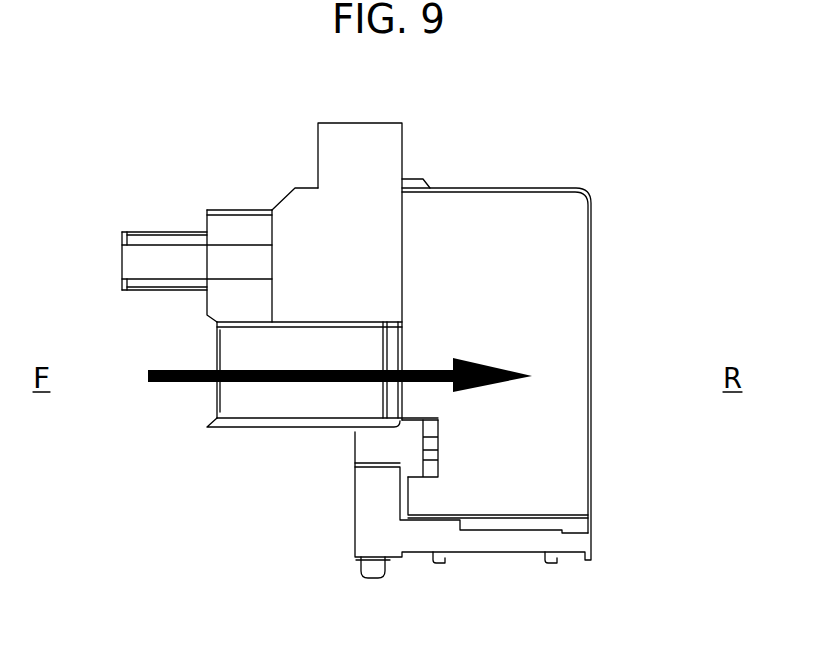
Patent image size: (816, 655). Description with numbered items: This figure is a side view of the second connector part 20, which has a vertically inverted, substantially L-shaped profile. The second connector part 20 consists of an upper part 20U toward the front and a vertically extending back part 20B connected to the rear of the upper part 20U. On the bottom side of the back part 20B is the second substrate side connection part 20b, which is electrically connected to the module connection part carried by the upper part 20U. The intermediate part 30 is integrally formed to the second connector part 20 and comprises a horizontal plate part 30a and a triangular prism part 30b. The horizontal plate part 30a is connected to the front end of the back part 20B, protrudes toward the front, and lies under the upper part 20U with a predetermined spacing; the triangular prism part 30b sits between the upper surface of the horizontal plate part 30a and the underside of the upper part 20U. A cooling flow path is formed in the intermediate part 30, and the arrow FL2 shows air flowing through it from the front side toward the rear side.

The second connector part 20 is at (174, 136).
The upper part 20U is at (279, 188).
The back part 20B is at (600, 247).
The second substrate side connection part 20b is at (440, 563).
The intermediate part 30 is at (198, 445).
The horizontal plate part 30a is at (263, 433).
The triangular prism part 30b is at (230, 342).
The arrow FL2 is at (160, 386).